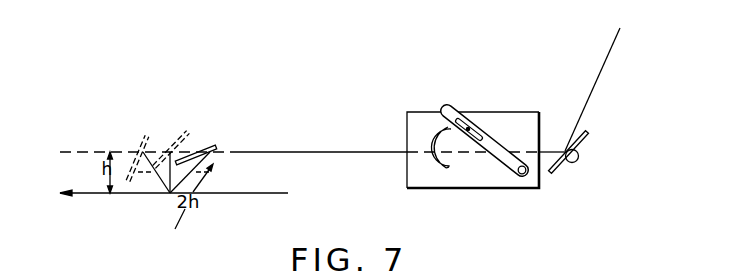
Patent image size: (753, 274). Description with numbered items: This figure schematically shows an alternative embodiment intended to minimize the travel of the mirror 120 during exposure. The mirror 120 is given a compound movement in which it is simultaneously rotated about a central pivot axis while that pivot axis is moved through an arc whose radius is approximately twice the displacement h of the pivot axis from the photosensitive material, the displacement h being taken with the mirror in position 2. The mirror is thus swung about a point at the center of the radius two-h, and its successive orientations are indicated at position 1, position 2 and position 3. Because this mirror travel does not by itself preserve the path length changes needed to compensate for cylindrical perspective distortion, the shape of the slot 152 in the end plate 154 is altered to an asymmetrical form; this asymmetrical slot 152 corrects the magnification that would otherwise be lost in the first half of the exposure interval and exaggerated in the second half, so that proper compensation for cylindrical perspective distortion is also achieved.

The mirror position 1 is at (223, 114).
The mirror position 2 is at (174, 138).
The mirror position 3 is at (139, 148).
The mirror 120 is at (212, 130).
The slot 152 is at (438, 145).
The end plate 154 is at (500, 121).